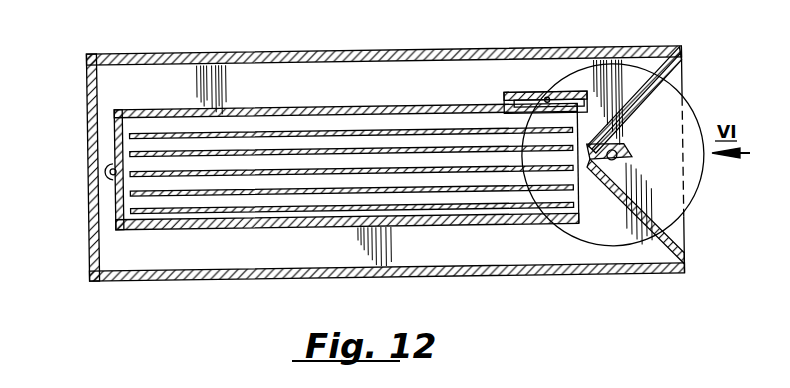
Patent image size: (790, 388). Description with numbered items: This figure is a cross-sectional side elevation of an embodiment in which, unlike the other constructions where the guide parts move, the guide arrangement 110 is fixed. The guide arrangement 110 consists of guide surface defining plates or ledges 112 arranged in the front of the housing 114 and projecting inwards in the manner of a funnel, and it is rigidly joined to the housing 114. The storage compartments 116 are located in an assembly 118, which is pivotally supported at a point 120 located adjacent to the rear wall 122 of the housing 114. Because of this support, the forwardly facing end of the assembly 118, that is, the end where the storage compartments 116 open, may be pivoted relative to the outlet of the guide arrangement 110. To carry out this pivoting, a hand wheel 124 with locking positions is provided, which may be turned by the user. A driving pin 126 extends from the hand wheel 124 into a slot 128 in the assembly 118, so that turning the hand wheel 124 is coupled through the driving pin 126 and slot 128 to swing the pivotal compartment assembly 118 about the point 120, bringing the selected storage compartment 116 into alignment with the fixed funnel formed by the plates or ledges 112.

The guide arrangement 110 is at (688, 190).
The plates or ledges 112 is at (628, 173).
The housing 114 is at (150, 58).
The storage compartments 116 is at (286, 215).
The assembly 118 is at (174, 250).
The point 120 is at (110, 172).
The rear wall 122 is at (92, 68).
The hand wheel 124 is at (683, 108).
The driving pin 126 is at (552, 99).
The slot 128 is at (578, 102).